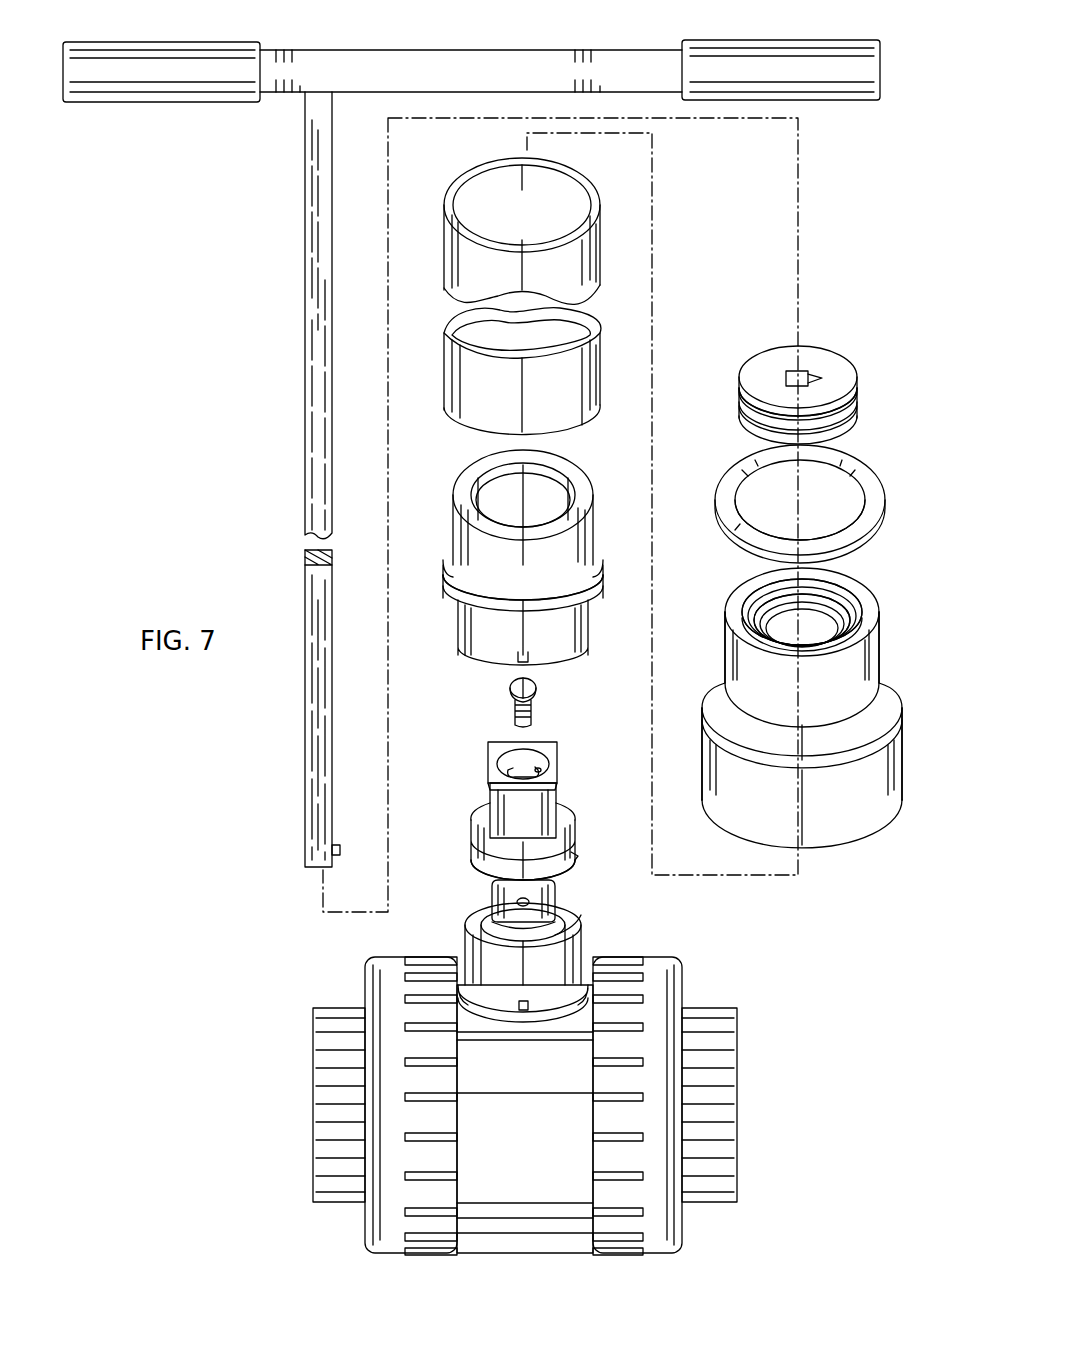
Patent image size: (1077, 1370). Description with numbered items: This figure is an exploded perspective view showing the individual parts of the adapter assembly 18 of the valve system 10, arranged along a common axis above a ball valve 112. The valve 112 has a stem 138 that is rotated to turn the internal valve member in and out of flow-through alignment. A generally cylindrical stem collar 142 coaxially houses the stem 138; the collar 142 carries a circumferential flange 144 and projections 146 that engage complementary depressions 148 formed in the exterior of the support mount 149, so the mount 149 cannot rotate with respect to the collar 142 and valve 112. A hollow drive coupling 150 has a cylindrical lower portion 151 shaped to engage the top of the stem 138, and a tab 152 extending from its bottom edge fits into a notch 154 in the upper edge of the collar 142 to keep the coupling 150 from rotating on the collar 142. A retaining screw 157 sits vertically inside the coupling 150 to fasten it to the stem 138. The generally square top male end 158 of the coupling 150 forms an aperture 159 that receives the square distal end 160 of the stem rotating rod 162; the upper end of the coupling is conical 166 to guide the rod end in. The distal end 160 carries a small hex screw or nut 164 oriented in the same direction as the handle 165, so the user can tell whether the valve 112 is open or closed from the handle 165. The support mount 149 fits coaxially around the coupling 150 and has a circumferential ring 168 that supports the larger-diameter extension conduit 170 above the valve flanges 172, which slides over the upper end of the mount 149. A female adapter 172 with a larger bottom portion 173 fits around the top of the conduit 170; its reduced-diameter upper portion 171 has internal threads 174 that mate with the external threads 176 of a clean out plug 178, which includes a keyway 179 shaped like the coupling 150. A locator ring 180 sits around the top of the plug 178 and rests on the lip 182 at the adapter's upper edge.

The valve assembly 10 is at (282, 343).
The valve insert assembly 18 is at (617, 307).
The ball valve 112 is at (737, 1005).
The stem 138 is at (548, 895).
The stem collar 142 is at (568, 940).
The circumferential flange 144 is at (528, 1010).
The projections 146 is at (523, 1012).
The depressions 148 is at (530, 660).
The support mount 149 is at (445, 540).
The hollow drive coupling 150 is at (560, 820).
The lower portion 151 is at (480, 838).
The tab 152 is at (565, 860).
The notch 154 is at (570, 915).
The retaining screw 157 is at (515, 716).
The top male end 158 is at (488, 765).
The aperture 159 is at (537, 771).
The distal end 160 is at (318, 860).
The stem rotating rod 162 is at (305, 258).
The hex shaped screw or nut 164 is at (342, 850).
The handle 165 is at (538, 60).
The conical upper end 166 is at (540, 762).
The circumferential flange or ring 168 is at (595, 578).
The extension conduit 170 is at (465, 258).
The upper portion 171 is at (735, 650).
The female adapter 172 is at (410, 960).
The bottom portion 173 is at (700, 783).
The internal threads 174 is at (842, 592).
The external threads 176 is at (745, 405).
The clean out plug 178 is at (782, 360).
The keyway 179 is at (805, 375).
The locator ring 180 is at (752, 460).
The flange or lip 182 is at (868, 612).